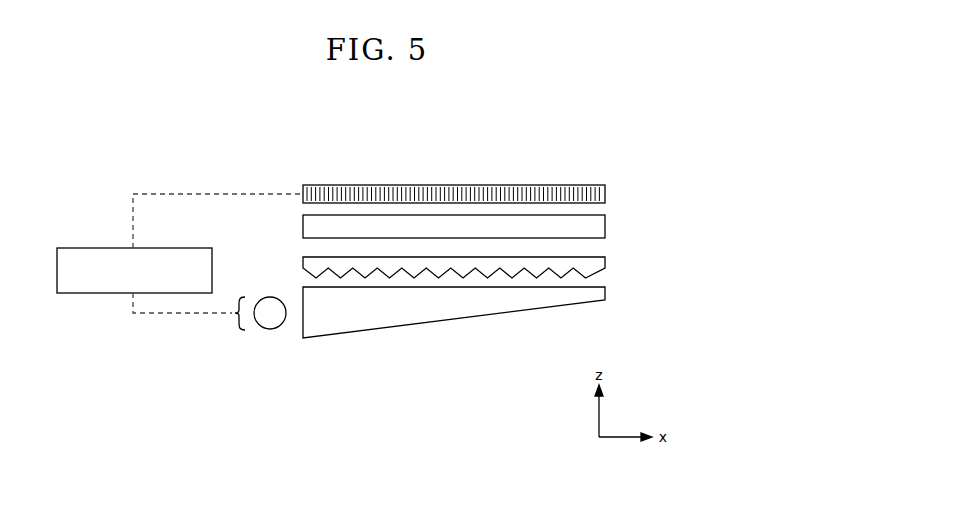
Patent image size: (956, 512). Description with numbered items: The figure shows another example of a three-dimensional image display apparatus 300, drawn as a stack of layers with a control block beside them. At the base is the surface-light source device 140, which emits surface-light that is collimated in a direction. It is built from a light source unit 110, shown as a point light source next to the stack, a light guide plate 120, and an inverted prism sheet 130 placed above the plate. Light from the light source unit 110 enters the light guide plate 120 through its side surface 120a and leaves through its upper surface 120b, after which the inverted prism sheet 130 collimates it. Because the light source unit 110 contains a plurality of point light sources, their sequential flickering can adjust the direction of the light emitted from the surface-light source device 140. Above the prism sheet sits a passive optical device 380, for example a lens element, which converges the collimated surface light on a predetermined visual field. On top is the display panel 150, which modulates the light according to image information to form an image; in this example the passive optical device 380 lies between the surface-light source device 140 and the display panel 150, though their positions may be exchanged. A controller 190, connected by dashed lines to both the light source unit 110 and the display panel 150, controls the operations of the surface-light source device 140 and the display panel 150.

The 3D image display apparatus 300 is at (582, 165).
The display panel 150 is at (605, 192).
The passive optical device 380 is at (605, 227).
The inverted prism sheet 130 is at (605, 262).
The light guide plate 120 is at (605, 295).
The surface-light source device 140 is at (678, 257).
The side surface 120a is at (303, 322).
The upper surface 120b is at (530, 284).
The light source unit 110 is at (258, 332).
The controller 190 is at (100, 293).